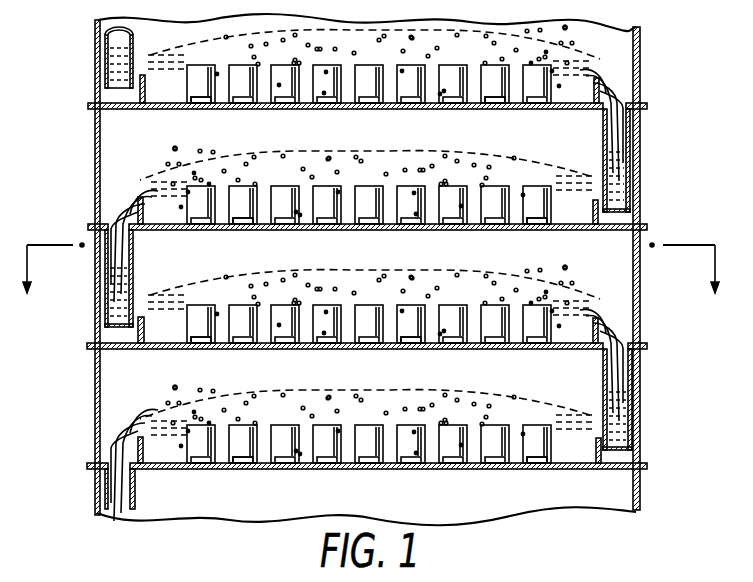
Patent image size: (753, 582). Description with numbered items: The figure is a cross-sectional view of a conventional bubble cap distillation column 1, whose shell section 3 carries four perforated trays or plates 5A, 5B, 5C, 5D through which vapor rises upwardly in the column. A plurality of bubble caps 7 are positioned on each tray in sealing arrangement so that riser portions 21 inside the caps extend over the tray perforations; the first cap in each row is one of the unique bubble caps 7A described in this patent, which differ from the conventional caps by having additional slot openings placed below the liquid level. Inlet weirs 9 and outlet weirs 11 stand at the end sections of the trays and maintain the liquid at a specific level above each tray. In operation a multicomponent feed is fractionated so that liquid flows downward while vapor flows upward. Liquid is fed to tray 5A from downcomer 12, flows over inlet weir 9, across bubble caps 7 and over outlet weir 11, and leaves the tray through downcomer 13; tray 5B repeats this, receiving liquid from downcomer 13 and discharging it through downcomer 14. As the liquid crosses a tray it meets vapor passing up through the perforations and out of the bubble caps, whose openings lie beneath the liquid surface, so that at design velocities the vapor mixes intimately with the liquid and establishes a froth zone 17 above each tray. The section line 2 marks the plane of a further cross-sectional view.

The distillation column 1 is at (652, 416).
The section line 2- 2 is at (369, 284).
The shell section 3 is at (640, 325).
The tray 5A is at (335, 109).
The tray 5B is at (340, 230).
The tray 5C is at (308, 349).
The tray 5D is at (315, 469).
The bubble cap 7 is at (328, 67).
The bubble cap 7A is at (212, 90).
The inlet weir 9 is at (150, 97).
The outlet weir 11 is at (585, 88).
The downcomer 12 is at (104, 62).
The downcomer 13 is at (620, 160).
The downcomer 14 is at (118, 281).
The froth zone 17 is at (358, 53).
The riser portion 21 is at (532, 109).